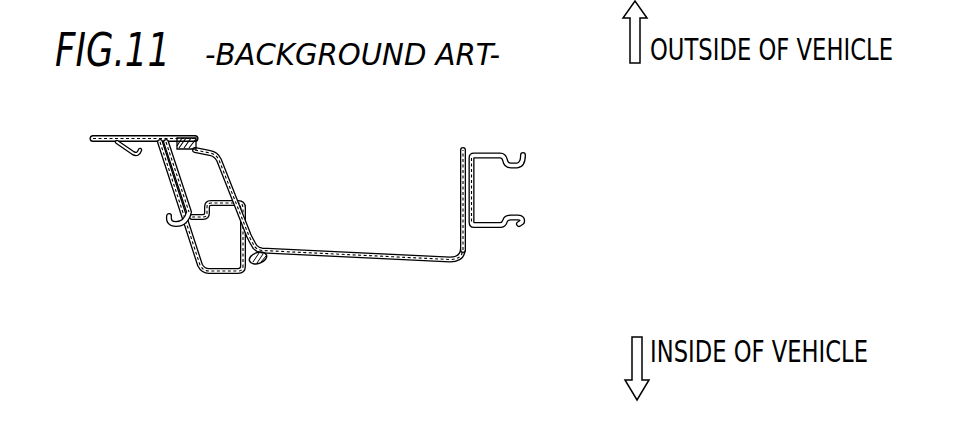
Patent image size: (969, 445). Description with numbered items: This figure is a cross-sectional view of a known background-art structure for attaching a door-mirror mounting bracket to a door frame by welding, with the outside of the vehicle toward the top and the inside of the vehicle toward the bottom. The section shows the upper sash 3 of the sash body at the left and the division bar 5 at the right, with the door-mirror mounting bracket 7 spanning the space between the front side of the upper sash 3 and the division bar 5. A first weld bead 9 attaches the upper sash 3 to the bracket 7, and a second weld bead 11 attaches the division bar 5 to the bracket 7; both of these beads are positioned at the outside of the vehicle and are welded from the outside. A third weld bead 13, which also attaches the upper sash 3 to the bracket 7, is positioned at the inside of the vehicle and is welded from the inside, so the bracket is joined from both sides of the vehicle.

The upper sash 3 is at (163, 181).
The division bar 5 is at (492, 152).
The door-mirror mounting bracket 7 is at (392, 262).
The first weld bead 9 is at (195, 141).
The second weld bead 11 is at (465, 184).
The third weld bead 13 is at (264, 265).